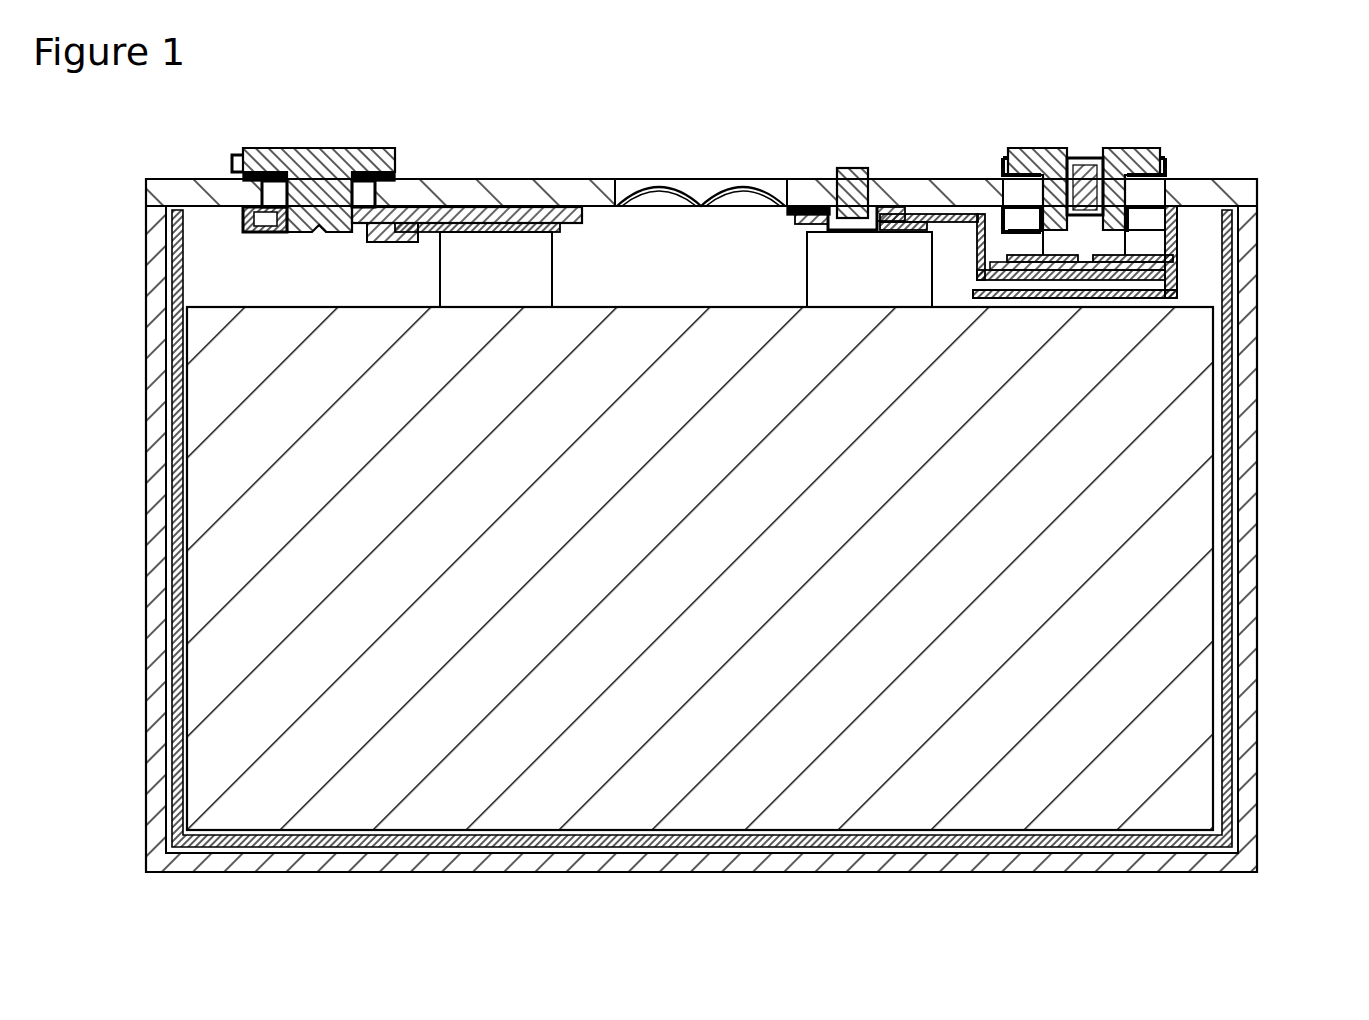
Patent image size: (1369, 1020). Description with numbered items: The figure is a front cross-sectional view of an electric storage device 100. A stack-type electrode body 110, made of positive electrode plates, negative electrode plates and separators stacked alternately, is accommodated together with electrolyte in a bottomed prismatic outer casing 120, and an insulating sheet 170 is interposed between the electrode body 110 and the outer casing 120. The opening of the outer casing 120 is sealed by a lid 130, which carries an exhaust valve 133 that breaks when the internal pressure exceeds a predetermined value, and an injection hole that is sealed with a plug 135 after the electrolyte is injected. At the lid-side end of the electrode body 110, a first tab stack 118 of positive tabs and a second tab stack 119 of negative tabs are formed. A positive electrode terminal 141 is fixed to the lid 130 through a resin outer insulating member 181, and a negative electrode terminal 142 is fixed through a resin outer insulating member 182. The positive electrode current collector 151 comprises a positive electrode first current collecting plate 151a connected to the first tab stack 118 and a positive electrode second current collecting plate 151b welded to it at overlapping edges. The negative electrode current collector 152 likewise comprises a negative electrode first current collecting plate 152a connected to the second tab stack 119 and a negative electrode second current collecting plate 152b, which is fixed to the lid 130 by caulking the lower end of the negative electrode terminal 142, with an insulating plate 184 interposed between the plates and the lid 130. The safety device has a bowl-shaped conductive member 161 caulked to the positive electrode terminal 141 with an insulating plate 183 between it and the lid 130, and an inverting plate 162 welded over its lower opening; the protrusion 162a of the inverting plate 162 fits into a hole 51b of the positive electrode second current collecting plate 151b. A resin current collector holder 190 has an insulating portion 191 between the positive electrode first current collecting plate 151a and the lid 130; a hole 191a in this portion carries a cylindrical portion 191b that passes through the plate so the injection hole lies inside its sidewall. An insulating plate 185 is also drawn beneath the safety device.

The electric storage device 100 is at (790, 883).
The electrode body 110 is at (1200, 420).
The first tab stack 118 is at (807, 270).
The second tab stack 119 is at (552, 270).
The outer casing 120 is at (1252, 520).
The lid 130 is at (696, 145).
The exhaust valve 133 is at (680, 190).
The plug 135 is at (852, 168).
The positive electrode terminal 141 is at (1128, 150).
The negative electrode terminal 142 is at (320, 150).
The positive electrode current collector 151 is at (970, 214).
The positive electrode first current collecting plate 151a is at (805, 212).
The positive electrode second current collecting plate 151b is at (1185, 272).
The negative electrode current collector 152 is at (465, 208).
The negative electrode first current collecting plate 152a is at (400, 224).
The negative electrode second current collecting plate 152b is at (245, 148).
The conductive member 161 is at (1180, 212).
The inverting plate 162 is at (1185, 232).
The protrusion 162a is at (1080, 158).
The insulating sheet 170 is at (1230, 466).
The outer insulating member 181 is at (1003, 170).
The outer insulating member 182 is at (380, 155).
The insulating plate 183 is at (1155, 165).
The insulating plate 184 is at (530, 222).
The insulating plate 185 is at (1155, 300).
The current collector holder 190 is at (915, 214).
The insulating portion 191 is at (820, 215).
The hole 191a is at (805, 213).
The cylindrical portion 191b is at (885, 207).
The hole 51b is at (1087, 276).